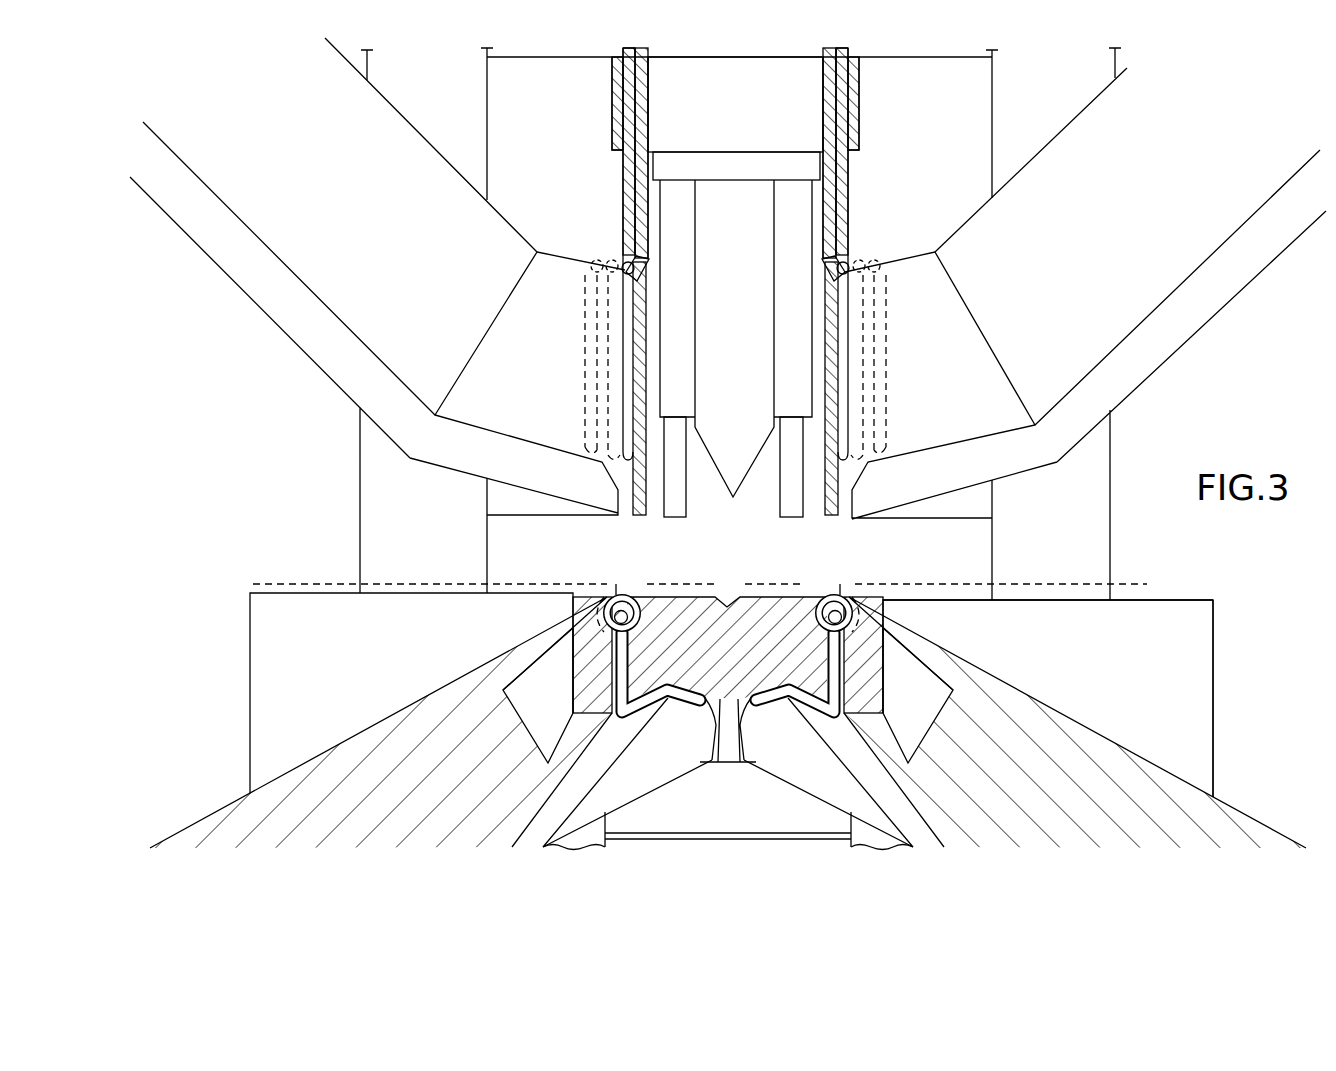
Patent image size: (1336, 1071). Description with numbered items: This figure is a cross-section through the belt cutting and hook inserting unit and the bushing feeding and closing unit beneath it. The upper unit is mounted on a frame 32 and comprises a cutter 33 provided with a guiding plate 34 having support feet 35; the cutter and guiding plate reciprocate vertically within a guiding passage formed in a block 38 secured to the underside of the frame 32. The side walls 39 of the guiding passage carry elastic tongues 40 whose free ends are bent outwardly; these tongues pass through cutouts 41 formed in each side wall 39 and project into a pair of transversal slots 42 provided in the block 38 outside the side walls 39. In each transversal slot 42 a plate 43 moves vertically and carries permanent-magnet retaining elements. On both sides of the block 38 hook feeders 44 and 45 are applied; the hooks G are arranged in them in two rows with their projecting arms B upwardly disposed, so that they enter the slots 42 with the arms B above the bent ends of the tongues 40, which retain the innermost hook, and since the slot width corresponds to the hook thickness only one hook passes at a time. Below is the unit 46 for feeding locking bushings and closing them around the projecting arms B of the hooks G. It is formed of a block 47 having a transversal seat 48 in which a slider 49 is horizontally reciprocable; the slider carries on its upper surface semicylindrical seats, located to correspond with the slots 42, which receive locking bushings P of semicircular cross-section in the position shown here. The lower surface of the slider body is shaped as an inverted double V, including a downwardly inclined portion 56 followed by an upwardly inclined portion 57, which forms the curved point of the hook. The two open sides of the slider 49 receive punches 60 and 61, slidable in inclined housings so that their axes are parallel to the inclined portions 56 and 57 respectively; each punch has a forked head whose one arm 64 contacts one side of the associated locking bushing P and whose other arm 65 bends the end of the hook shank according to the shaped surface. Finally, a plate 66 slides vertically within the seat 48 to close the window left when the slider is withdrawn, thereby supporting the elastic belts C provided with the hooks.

The frame 32 is at (485, 141).
The cutter 33 is at (719, 310).
The guiding plate 34 is at (665, 280).
The support feet 35 is at (685, 518).
The block 38 is at (922, 164).
The side walls 39 is at (640, 516).
The elastic tongues 40 is at (650, 207).
The cutouts 41 is at (635, 301).
The transversal slots 42 is at (627, 506).
The plate 43 is at (623, 186).
The hook feeder 44 is at (1212, 308).
The hook feeder 45 is at (334, 383).
The unit for feeding and closing locking bushings 46 is at (1213, 692).
The block 47 is at (1188, 612).
The transversal seat 48 is at (835, 841).
The slider 49 is at (706, 827).
The second downwardly inclined portion 56 is at (745, 765).
The third upwardly inclined portion 57 is at (709, 763).
The punch 60 is at (1037, 702).
The punch 61 is at (333, 751).
The arm of forked head 64 is at (521, 656).
The arm of forked head 65 is at (632, 788).
The plate 66 is at (728, 841).
The projecting arms B is at (598, 258).
The hooks G is at (585, 356).
The elastic belts C is at (297, 582).
The locking bushings P is at (641, 598).